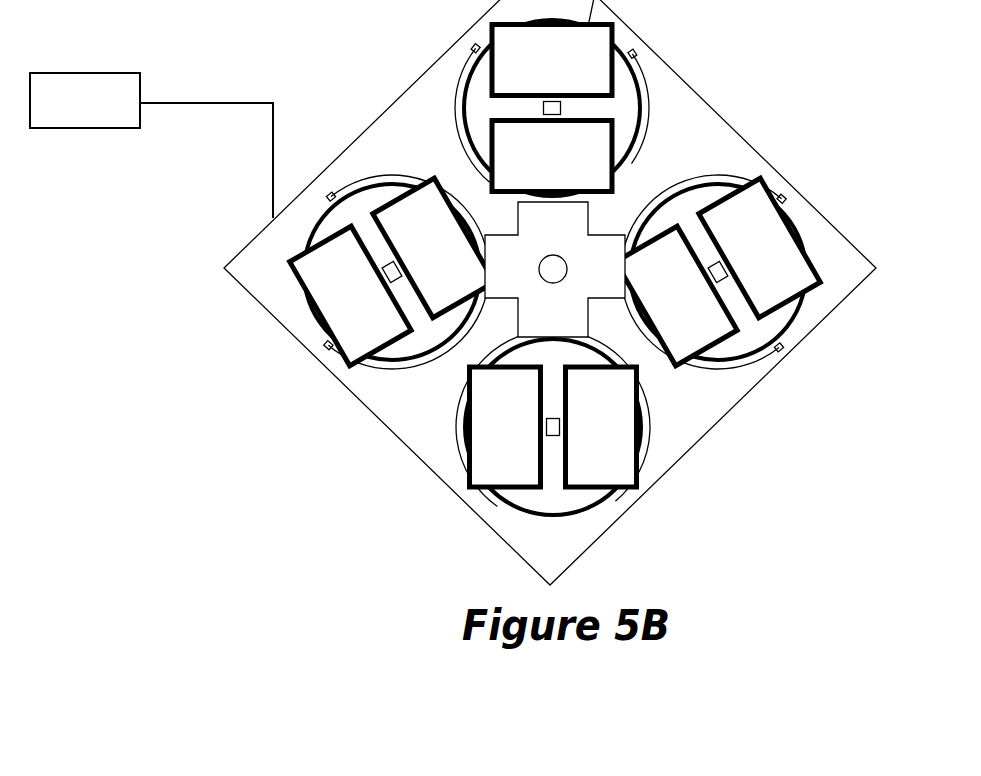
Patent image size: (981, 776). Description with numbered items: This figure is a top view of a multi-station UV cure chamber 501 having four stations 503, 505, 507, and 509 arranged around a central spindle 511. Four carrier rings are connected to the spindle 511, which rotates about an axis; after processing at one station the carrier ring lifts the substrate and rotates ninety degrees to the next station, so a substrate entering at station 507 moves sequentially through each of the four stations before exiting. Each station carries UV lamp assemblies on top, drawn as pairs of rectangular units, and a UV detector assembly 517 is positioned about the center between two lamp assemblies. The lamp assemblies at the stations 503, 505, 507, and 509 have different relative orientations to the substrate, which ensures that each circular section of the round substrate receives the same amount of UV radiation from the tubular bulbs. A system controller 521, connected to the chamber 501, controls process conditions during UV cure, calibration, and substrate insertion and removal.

The chamber 501 is at (722, 68).
The station 503 is at (346, 363).
The station 505 is at (748, 176).
The station 507 is at (580, 422).
The station 509 is at (633, 57).
The spindle 511 is at (508, 248).
The UV detector assembly 517 is at (547, 426).
The system controller 521 is at (151, 145).